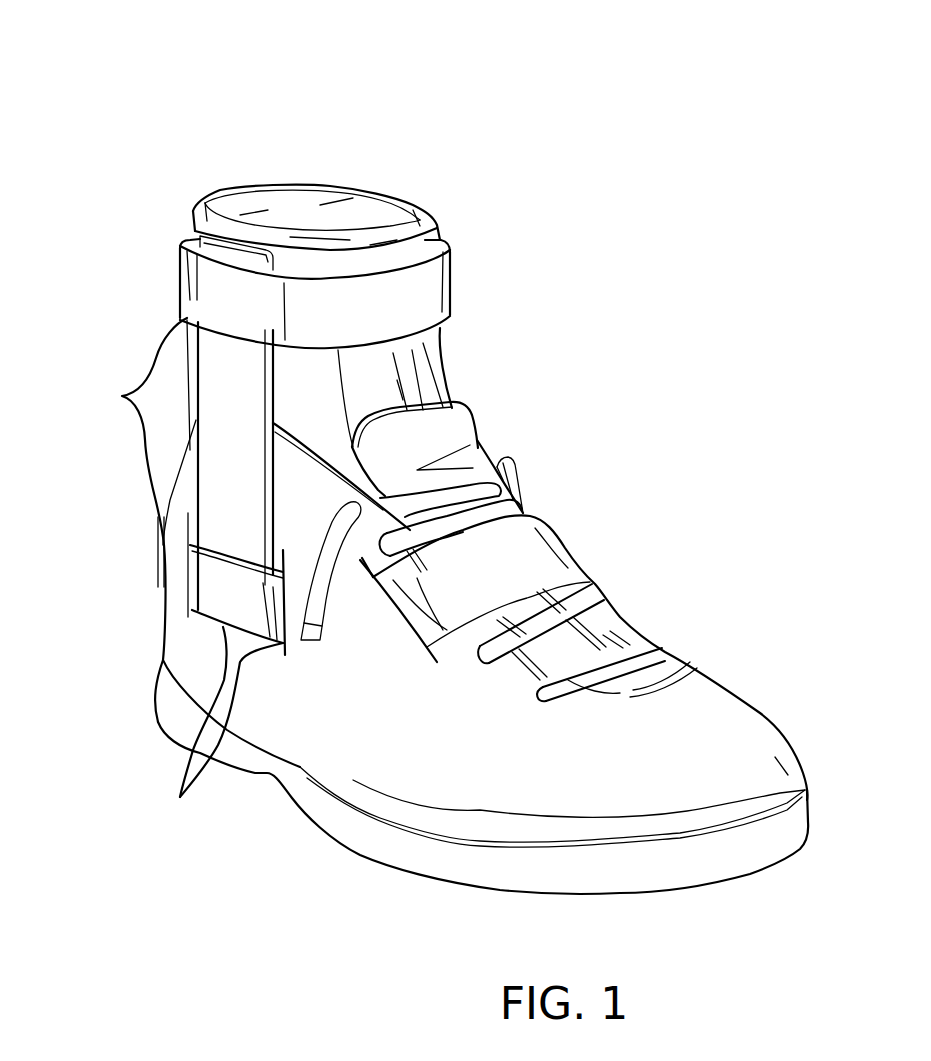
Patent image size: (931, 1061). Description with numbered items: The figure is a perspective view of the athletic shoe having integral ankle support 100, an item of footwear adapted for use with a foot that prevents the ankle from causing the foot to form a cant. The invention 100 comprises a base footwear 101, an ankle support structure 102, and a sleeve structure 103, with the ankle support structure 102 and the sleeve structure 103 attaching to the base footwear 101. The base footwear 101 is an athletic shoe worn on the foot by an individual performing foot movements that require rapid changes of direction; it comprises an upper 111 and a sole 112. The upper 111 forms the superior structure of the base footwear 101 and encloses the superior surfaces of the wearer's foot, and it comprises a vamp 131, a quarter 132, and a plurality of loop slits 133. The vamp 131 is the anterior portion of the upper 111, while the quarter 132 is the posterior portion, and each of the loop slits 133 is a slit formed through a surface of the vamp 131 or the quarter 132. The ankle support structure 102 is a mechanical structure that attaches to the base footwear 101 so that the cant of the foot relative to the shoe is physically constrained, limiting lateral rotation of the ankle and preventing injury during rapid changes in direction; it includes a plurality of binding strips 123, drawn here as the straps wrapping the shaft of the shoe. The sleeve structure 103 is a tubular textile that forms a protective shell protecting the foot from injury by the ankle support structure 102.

The athletic shoe having integral ankle support 100 is at (148, 115).
The base footwear 101 is at (770, 717).
The ankle support structure 102 is at (177, 280).
The sleeve structure 103 is at (418, 363).
The upper 111 is at (665, 640).
The sole 112 is at (777, 845).
The binding strips 123 is at (122, 396).
The vamp 131 is at (718, 727).
The quarter 132 is at (173, 625).
The loop slits 133 is at (158, 552).